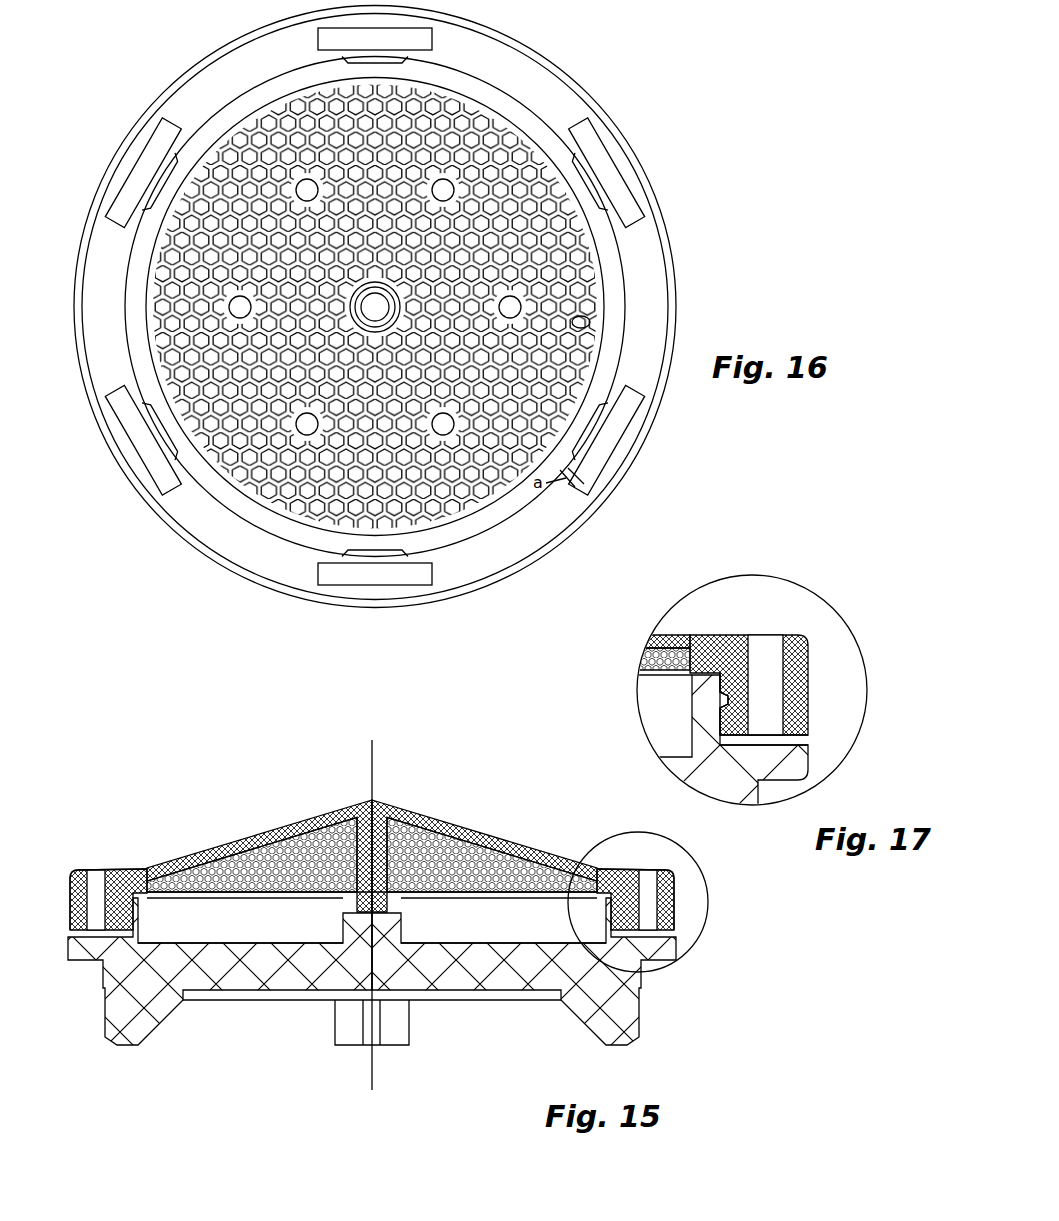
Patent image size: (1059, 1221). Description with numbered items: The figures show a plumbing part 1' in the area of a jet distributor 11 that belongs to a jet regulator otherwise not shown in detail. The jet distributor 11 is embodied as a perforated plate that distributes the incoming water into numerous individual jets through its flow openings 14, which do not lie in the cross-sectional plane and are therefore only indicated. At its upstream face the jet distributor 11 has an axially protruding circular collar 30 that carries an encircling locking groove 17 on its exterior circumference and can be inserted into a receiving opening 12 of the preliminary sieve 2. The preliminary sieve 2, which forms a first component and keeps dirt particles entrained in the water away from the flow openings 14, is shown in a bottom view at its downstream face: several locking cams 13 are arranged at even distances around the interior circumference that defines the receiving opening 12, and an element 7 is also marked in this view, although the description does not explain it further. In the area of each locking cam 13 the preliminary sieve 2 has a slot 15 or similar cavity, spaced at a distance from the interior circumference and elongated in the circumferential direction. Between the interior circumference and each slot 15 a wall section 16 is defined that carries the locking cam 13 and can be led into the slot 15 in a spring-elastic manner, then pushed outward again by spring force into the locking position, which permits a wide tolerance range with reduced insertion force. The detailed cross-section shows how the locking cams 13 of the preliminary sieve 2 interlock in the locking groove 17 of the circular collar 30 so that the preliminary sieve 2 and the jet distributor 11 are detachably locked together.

In FIG. 15, the plumbing part 1' is at (128, 772).
In FIG. 16, the preliminary sieve 2 is at (690, 60).
In FIG. 15, the preliminary sieve 2 is at (446, 822).
In FIG. 17, the preliminary sieve 2 is at (732, 634).
In FIG. 16, the opening 7 is at (590, 322).
In FIG. 15, the jet distributor 11 is at (245, 972).
In FIG. 17, the jet distributor 11 is at (787, 766).
In FIG. 16, the receiving opening 12 is at (488, 126).
In FIG. 15, the receiving opening 12 is at (167, 925).
In FIG. 16, the locking cams 13 is at (598, 214).
In FIG. 15, the flow openings 14 is at (318, 958).
In FIG. 16, the slot 15 is at (602, 148).
In FIG. 16, the wall section 16 is at (608, 172).
In FIG. 17, the locking groove 17 is at (750, 748).
In FIG. 15, the circular collar 30 is at (612, 894).
In FIG. 17, the circular collar 30 is at (730, 722).